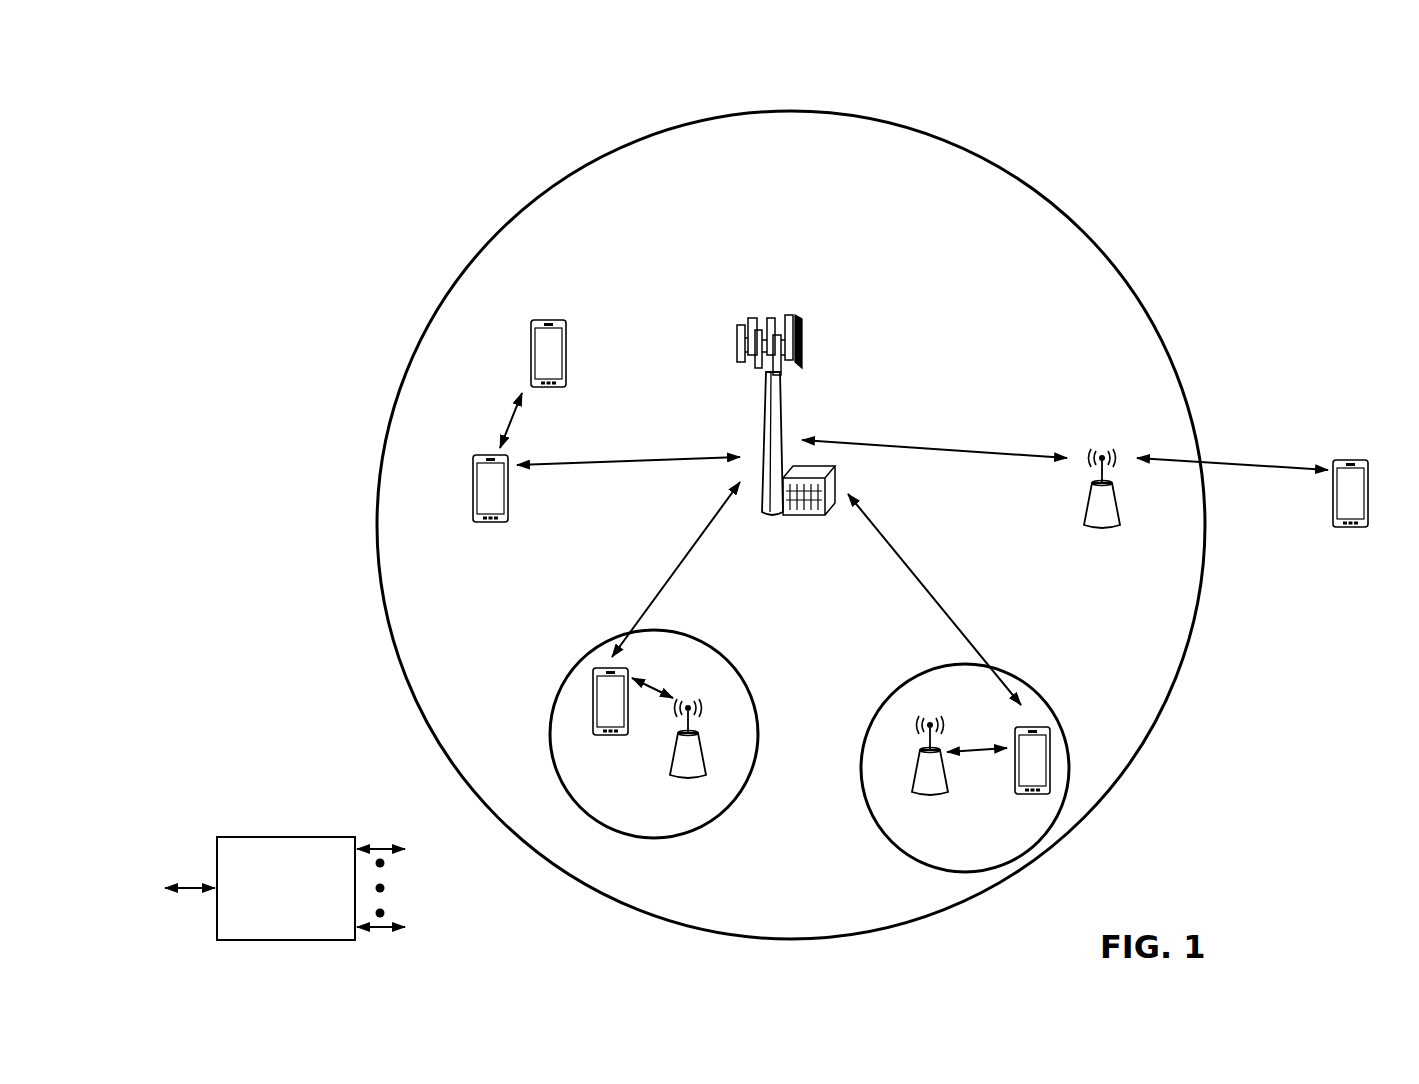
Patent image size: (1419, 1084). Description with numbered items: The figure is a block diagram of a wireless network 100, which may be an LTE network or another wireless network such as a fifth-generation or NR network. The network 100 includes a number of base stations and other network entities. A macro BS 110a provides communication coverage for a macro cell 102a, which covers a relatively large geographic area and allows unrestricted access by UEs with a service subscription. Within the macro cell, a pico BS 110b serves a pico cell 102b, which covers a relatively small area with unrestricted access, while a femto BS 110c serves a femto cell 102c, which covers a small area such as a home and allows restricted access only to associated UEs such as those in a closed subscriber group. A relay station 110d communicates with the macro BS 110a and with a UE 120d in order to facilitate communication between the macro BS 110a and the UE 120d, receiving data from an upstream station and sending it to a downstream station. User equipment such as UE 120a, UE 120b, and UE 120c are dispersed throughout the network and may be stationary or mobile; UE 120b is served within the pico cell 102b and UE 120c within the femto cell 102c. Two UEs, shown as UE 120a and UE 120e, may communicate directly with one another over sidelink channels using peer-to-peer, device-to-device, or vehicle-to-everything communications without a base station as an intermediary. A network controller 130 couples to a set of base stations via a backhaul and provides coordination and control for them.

The wireless network 100 is at (243, 65).
The macro cell 102a is at (1067, 214).
The pico cell 102b is at (744, 672).
The femto cell 102c is at (902, 681).
The macro BS 110a is at (780, 312).
The pico BS 110b is at (706, 760).
The femto BS 110c is at (913, 782).
The relay station 110d is at (1103, 448).
The UE 120a is at (473, 485).
The UE 120b is at (598, 735).
The UE 120c is at (1013, 797).
The UE 120d is at (1364, 461).
The UE 120e is at (531, 340).
The network controller 130 is at (284, 836).